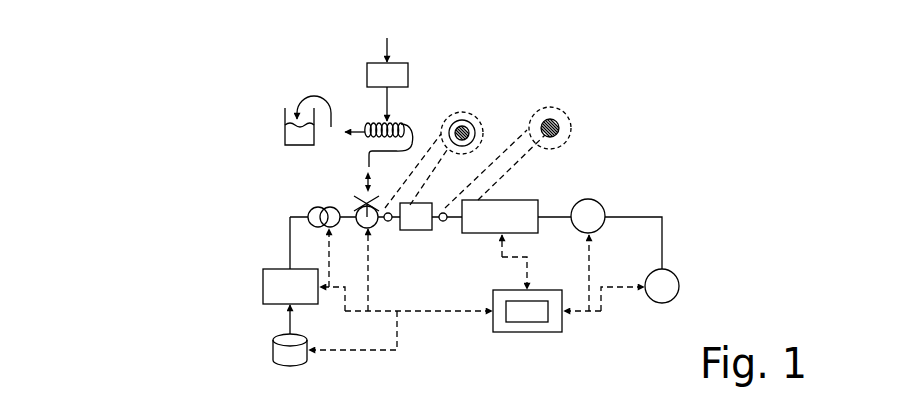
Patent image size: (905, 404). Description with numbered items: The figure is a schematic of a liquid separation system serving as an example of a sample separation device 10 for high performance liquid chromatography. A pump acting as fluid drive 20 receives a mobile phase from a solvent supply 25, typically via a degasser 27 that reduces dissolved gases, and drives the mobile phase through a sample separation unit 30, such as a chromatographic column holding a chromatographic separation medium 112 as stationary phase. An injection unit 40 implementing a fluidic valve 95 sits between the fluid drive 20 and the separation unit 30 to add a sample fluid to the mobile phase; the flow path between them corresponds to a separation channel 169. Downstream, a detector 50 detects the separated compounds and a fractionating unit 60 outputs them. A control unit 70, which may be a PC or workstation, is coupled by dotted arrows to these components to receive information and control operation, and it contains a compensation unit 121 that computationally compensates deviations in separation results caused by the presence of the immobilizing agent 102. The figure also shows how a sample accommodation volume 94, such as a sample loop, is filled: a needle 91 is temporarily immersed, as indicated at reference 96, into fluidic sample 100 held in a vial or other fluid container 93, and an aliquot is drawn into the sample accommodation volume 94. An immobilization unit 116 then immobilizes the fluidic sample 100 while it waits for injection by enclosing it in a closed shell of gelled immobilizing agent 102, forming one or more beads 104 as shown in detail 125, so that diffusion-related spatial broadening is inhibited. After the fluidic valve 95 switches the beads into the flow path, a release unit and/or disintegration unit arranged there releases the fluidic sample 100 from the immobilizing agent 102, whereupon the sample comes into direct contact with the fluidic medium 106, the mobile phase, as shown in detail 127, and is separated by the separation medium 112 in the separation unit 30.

The sample separation device 10 is at (576, 333).
The fluid drive 20 is at (309, 203).
The solvent supply 25 is at (273, 350).
The degasser 27 is at (262, 280).
The sample separation unit 30 is at (492, 234).
The injection unit 40 is at (372, 196).
The detector 50 is at (598, 199).
The fractionating unit 60 is at (679, 284).
The control unit 70 is at (522, 332).
The needle 91 is at (343, 130).
The fluid container 93 is at (285, 118).
The sample accommodation volume 94 is at (366, 137).
The fluidic valve 95 is at (358, 223).
The immersion of needle 96 is at (305, 97).
The fluidic sample 100 is at (284, 130).
The immobilizing agent 102 is at (470, 122).
The bead 104 is at (481, 137).
The fluidic medium 106 is at (444, 121).
The chromatographic separation medium 112 is at (523, 204).
The immobilization unit 116 is at (387, 79).
The compensation unit 121 is at (527, 311).
The detail of bead formation 125 is at (431, 117).
The detail of sample release 127 is at (548, 102).
The separation channel 169 is at (445, 221).